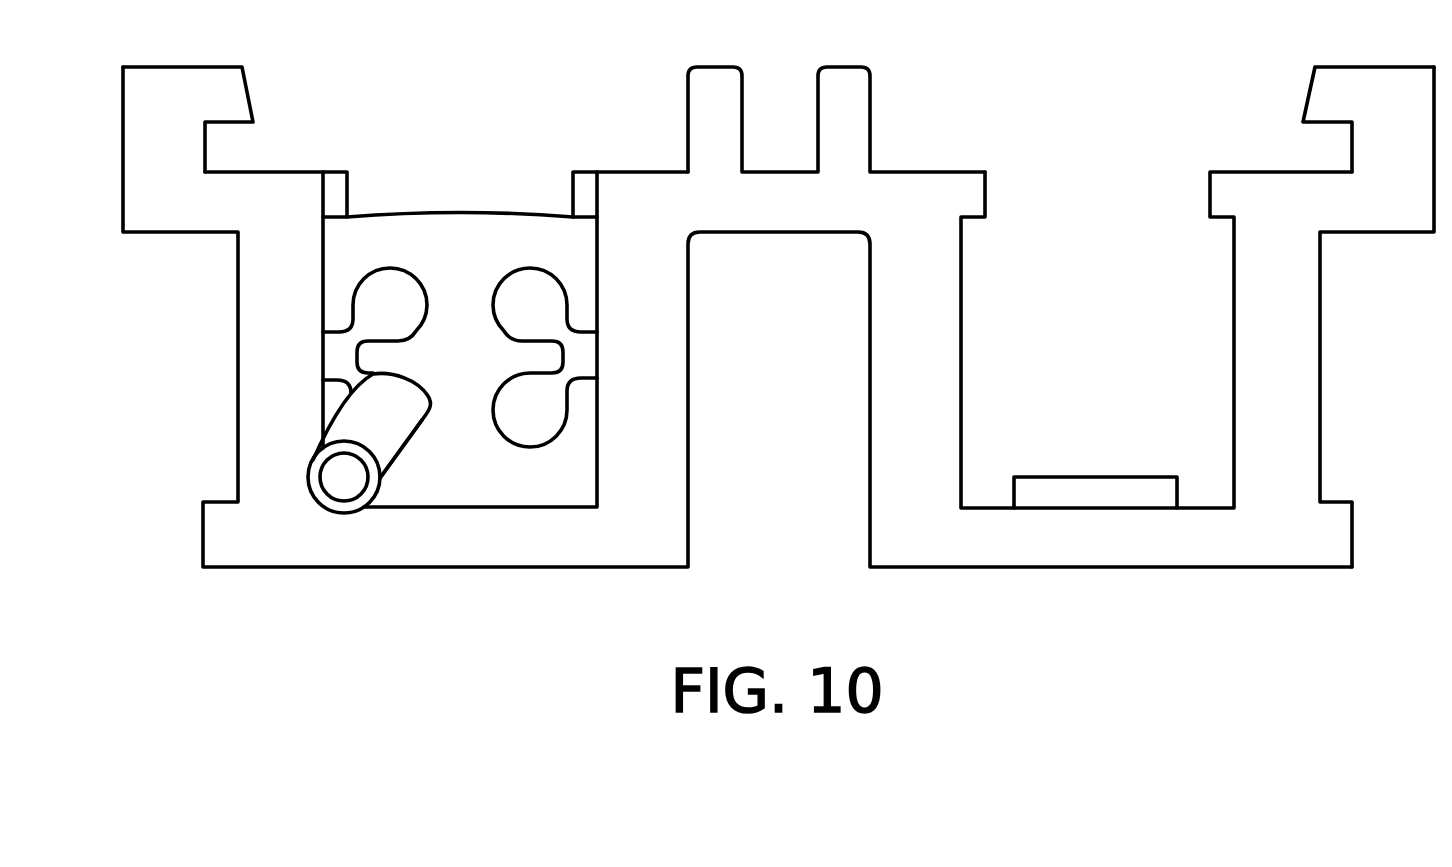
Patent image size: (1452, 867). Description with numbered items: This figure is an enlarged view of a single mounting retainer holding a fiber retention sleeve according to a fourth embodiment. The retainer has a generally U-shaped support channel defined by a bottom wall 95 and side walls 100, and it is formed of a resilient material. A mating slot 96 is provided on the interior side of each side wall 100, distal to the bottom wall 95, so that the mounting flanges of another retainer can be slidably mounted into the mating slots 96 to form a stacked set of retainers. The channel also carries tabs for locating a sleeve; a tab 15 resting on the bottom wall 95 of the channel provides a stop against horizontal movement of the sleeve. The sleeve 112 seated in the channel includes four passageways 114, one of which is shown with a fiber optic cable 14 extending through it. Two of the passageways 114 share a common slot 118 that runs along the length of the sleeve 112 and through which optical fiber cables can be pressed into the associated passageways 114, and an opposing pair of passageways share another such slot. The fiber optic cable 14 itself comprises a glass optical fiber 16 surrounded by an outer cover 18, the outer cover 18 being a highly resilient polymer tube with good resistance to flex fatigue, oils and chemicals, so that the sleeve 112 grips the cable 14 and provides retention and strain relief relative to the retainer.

The optical fiber cable 14 is at (356, 520).
The stop block 15 is at (1098, 492).
The glass optical fiber 16 is at (346, 478).
The outer cover 18 is at (385, 428).
The bottom wall 95 is at (1072, 556).
The mating slot 96 is at (255, 144).
The side wall 100 is at (1251, 347).
The sleeve 112 is at (437, 265).
The passageway 114 is at (537, 258).
The common slot 118 is at (338, 360).